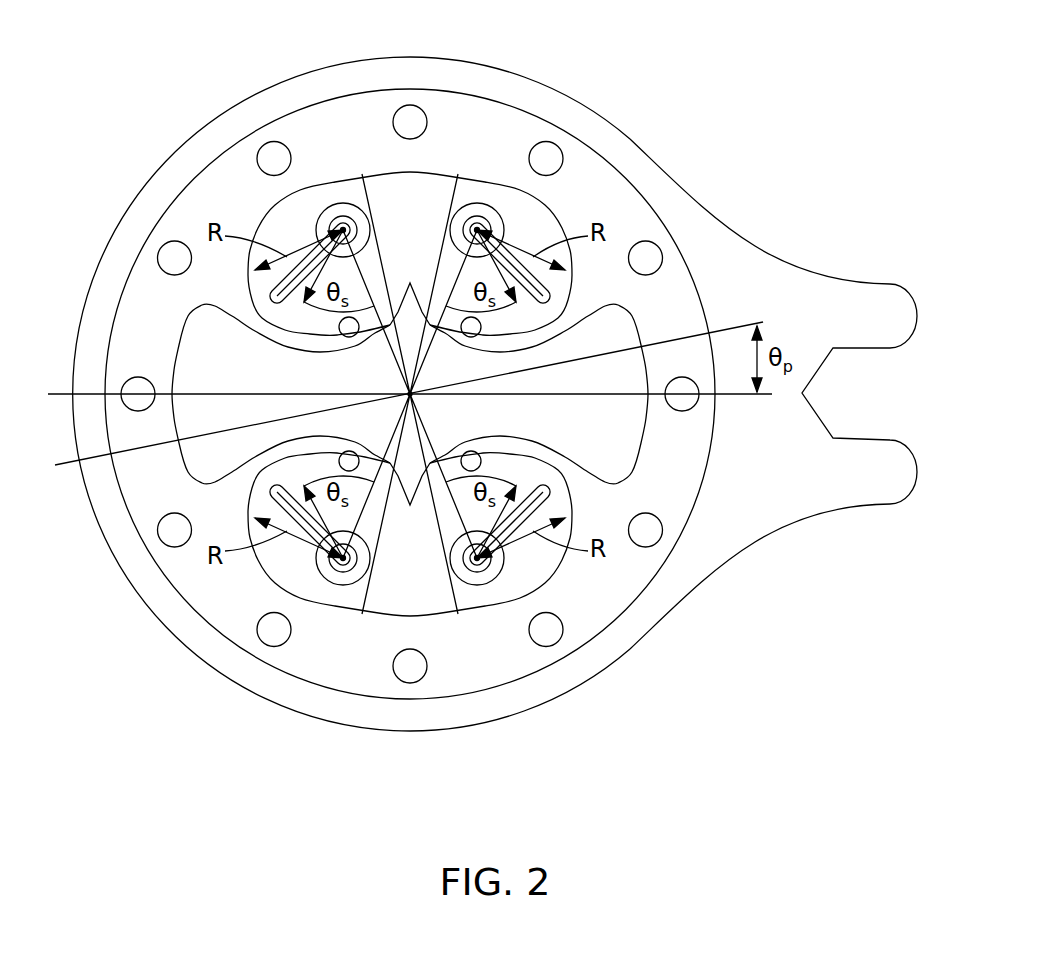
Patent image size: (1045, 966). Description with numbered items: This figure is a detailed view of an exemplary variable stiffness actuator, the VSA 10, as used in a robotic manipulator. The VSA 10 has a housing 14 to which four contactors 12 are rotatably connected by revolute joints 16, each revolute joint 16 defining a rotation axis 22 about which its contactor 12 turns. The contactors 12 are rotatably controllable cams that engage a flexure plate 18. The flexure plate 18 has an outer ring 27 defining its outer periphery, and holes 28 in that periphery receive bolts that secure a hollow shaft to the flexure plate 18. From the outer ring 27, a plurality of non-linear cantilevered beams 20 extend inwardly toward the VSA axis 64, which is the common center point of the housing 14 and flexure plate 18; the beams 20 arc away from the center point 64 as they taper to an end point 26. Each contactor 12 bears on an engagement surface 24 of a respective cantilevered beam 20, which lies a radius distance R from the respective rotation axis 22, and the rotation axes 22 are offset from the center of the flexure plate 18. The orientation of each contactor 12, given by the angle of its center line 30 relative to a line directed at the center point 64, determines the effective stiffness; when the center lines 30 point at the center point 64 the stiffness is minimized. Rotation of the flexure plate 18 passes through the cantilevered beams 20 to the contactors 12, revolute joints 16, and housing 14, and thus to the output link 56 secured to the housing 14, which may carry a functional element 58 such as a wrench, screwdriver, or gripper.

The variable stiffness actuator 10 is at (305, 72).
The contactor 12 is at (268, 278).
The housing 14 is at (614, 418).
The revolute joint 16 is at (352, 204).
The flexure plate 18 is at (622, 204).
The cantilevered beam 20 is at (286, 336).
The rotation axis 22 is at (333, 208).
The engagement surface 24 is at (354, 338).
The end point 26 is at (410, 283).
The outer ring 27 is at (212, 190).
The hole 28 is at (413, 115).
The center line 30 is at (275, 299).
The output link 56 is at (508, 86).
The functional element 58 is at (889, 379).
The VSA axis 64 is at (413, 397).